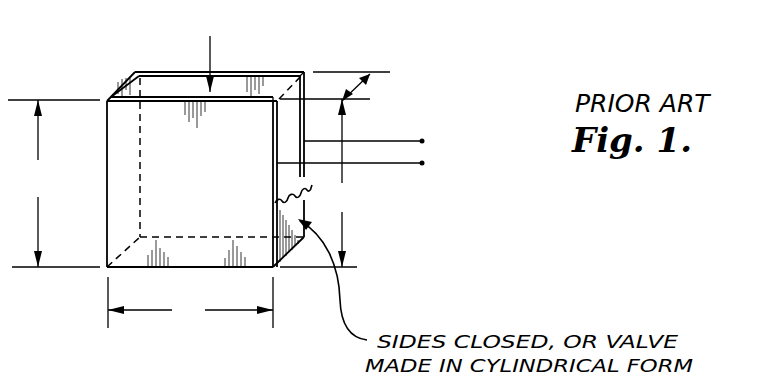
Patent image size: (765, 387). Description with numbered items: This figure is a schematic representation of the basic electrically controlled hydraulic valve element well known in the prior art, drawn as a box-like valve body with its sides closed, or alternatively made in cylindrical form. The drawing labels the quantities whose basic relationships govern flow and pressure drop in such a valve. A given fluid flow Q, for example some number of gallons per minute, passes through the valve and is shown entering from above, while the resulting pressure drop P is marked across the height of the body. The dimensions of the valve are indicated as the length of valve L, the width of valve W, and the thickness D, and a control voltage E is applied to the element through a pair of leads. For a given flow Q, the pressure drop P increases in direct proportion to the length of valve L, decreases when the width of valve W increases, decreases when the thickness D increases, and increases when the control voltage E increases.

The fluid flow Q is at (208, 50).
The pressure drop P is at (54, 183).
The width of valve W is at (190, 302).
The length of valve L is at (318, 183).
The thickness D is at (335, 86).
The control voltage E is at (363, 153).